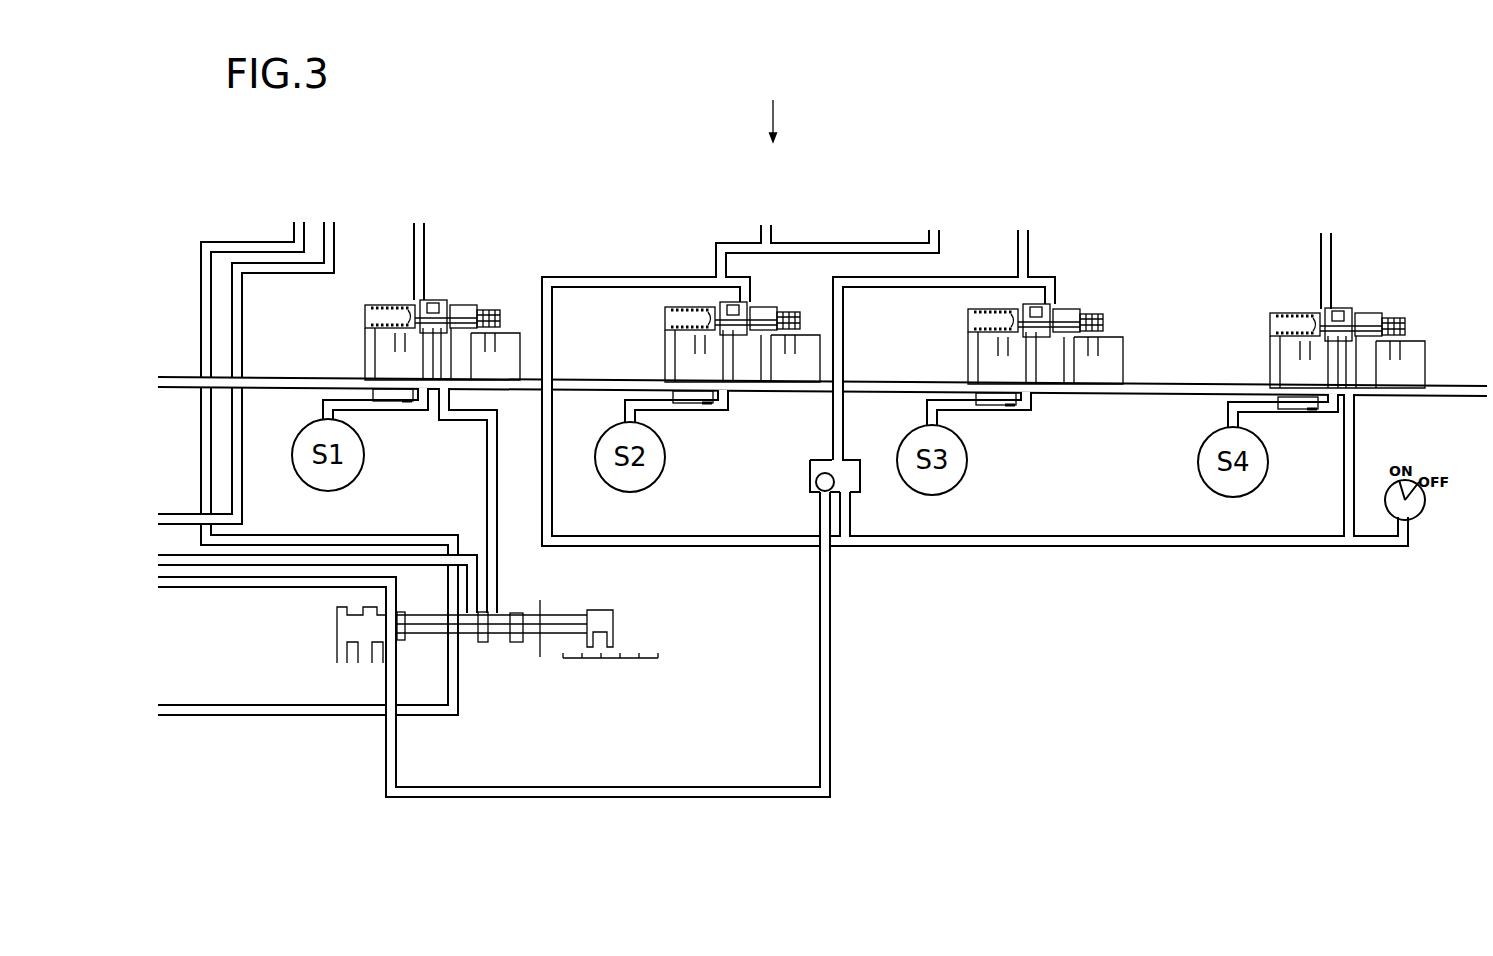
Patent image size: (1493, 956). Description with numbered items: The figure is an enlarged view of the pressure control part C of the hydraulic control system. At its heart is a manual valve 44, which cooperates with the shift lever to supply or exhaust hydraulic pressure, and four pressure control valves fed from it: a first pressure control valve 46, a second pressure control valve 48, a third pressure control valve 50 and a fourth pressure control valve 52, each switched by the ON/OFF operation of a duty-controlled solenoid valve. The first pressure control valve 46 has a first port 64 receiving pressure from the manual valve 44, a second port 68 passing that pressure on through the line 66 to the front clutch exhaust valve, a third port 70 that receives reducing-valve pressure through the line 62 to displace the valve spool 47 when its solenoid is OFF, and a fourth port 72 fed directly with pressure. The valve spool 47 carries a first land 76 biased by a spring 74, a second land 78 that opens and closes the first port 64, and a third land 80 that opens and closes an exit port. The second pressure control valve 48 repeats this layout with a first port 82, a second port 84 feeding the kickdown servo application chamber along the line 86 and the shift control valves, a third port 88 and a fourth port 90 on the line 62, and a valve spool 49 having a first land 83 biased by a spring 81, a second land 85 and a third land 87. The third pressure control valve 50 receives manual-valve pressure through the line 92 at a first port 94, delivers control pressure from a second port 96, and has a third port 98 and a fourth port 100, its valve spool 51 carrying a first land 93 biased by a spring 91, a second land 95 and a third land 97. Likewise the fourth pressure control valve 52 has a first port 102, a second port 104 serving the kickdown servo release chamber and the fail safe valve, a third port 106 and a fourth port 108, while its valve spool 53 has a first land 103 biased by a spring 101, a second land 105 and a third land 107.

The manual valve 44 is at (325, 628).
The first pressure control valve 46 is at (406, 426).
The valve spool 47 is at (432, 318).
The second pressure control valve 48 is at (728, 325).
The valve spool 49 is at (735, 320).
The third pressure control valve 50 is at (1016, 336).
The valve spool 51 is at (1037, 322).
The fourth pressure control valve 52 is at (1328, 350).
The valve spool 53 is at (1335, 332).
The line 62 is at (274, 389).
The first port 64 is at (444, 338).
The line 66 is at (427, 237).
The second port 68 is at (424, 300).
The third port 70 is at (366, 336).
The fourth port 72 is at (496, 338).
The spring 74 is at (369, 303).
The first land 76 is at (400, 303).
The second land 78 is at (470, 303).
The third land 80 is at (493, 308).
The spring 81 is at (665, 305).
The first port 82 is at (749, 303).
The first land 83 is at (690, 305).
The second port 84 is at (718, 303).
The second land 85 is at (768, 313).
The line 86 is at (840, 245).
The third land 87 is at (768, 320).
The third port 88 is at (663, 340).
The fourth port 90 is at (770, 342).
The spring 91 is at (968, 305).
The line 92 is at (845, 412).
The first land 93 is at (990, 305).
The first port 94 is at (1051, 305).
The second land 95 is at (1069, 318).
The second port 96 is at (1018, 303).
The third land 97 is at (1101, 325).
The third port 98 is at (966, 340).
The fourth port 100 is at (1070, 343).
The spring 101 is at (1273, 312).
The first port 102 is at (1351, 348).
The first land 103 is at (1297, 313).
The second port 104 is at (1331, 305).
The second land 105 is at (1366, 318).
The third port 106 is at (1268, 340).
The third land 107 is at (1406, 323).
The fourth port 108 is at (1378, 350).
The pressure control part C is at (772, 107).